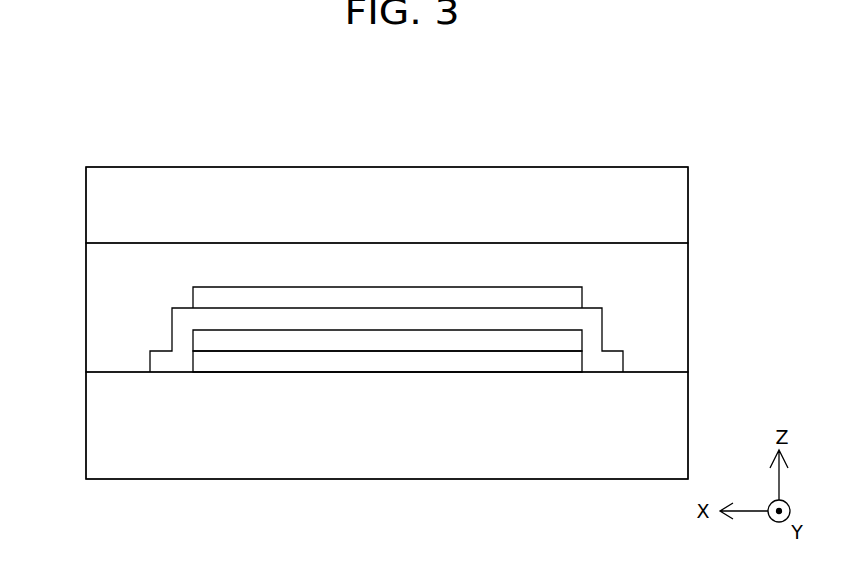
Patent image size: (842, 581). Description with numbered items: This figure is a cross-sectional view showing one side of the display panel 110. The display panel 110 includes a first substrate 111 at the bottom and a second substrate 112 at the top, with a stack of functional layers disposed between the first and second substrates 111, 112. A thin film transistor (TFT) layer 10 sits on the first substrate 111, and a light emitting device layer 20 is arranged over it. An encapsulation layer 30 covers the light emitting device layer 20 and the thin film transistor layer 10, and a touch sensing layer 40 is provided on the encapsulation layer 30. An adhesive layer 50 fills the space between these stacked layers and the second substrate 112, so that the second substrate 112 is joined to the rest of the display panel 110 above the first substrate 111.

The display panel 110 is at (66, 135).
The second substrate 112 is at (675, 212).
The first substrate 111 is at (675, 425).
The adhesive layer 50 is at (675, 303).
The thin film transistor (TFT) layer 10 is at (282, 357).
The light emitting device layer 20 is at (331, 337).
The encapsulation layer 30 is at (387, 318).
The touch sensing layer 40 is at (435, 297).